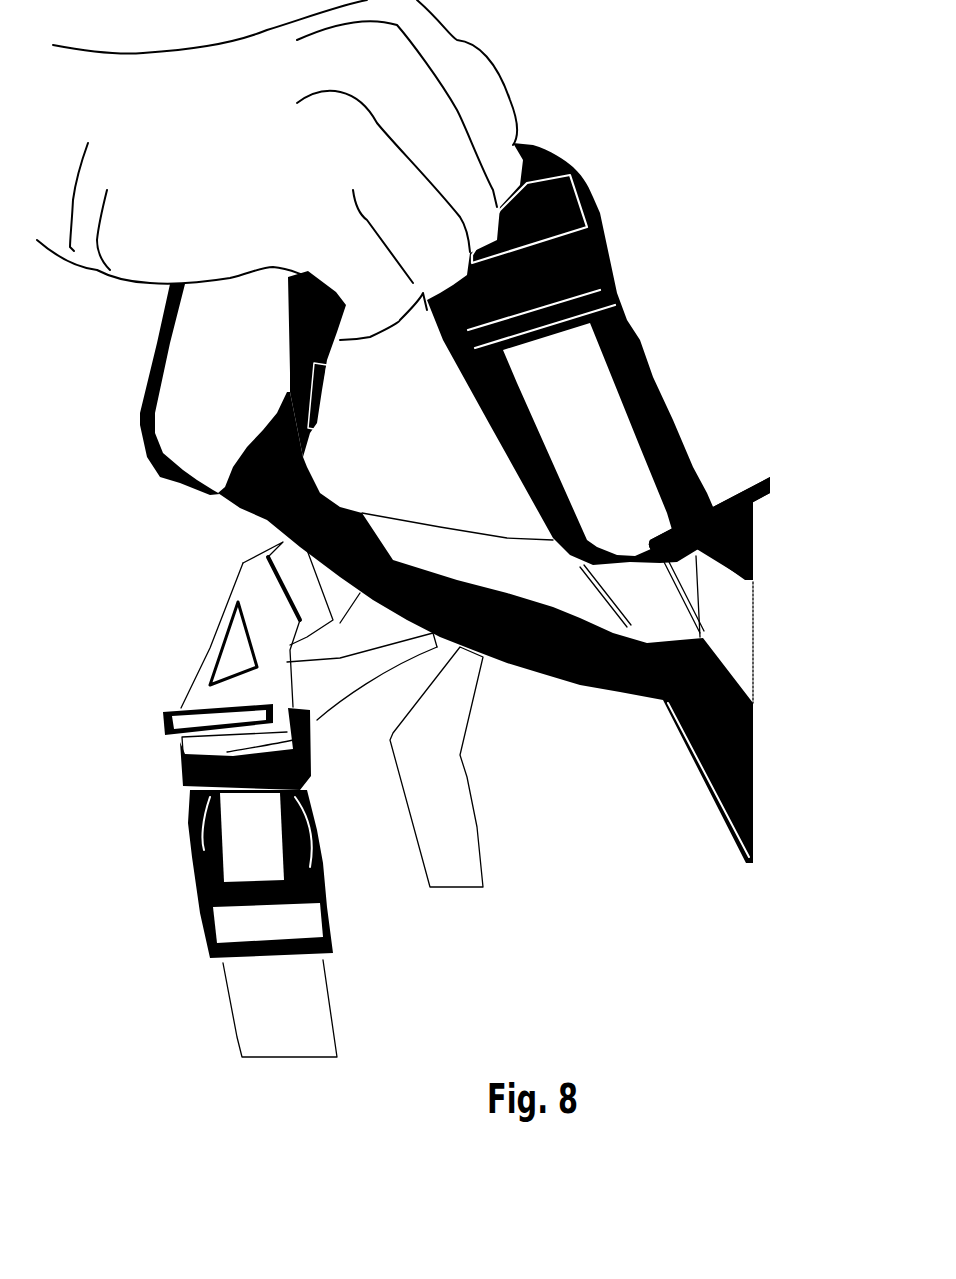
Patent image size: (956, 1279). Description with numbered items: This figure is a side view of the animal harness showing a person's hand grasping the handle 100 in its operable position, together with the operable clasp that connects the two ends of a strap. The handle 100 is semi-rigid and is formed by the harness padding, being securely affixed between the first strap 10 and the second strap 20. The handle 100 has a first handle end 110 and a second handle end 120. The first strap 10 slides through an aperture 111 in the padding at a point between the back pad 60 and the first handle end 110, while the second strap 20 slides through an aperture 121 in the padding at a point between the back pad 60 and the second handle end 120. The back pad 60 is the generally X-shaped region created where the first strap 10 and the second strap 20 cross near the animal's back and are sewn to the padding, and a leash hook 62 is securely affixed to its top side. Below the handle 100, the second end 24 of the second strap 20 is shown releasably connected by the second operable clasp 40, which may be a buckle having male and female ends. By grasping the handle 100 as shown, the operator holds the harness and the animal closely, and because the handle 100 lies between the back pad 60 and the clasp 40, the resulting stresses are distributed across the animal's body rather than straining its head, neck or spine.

The first strap 10 is at (457, 803).
The second strap 20 is at (247, 1028).
The second end of the second strap 24 is at (210, 648).
The second operable clasp 40 is at (178, 878).
The back pad 60 is at (708, 568).
The leash hook 62 is at (733, 490).
The handle 100 is at (150, 375).
The first handle end 110 is at (590, 361).
The aperture 111 is at (630, 340).
The second handle end 120 is at (257, 513).
The aperture 121 is at (370, 518).